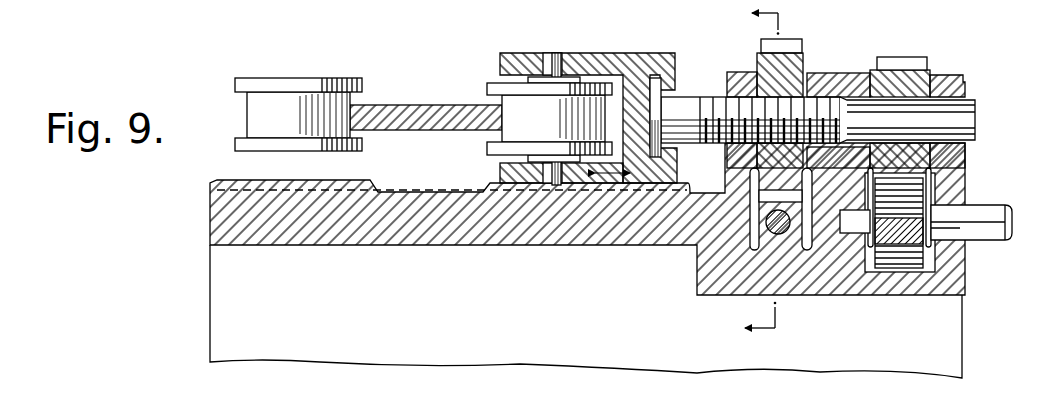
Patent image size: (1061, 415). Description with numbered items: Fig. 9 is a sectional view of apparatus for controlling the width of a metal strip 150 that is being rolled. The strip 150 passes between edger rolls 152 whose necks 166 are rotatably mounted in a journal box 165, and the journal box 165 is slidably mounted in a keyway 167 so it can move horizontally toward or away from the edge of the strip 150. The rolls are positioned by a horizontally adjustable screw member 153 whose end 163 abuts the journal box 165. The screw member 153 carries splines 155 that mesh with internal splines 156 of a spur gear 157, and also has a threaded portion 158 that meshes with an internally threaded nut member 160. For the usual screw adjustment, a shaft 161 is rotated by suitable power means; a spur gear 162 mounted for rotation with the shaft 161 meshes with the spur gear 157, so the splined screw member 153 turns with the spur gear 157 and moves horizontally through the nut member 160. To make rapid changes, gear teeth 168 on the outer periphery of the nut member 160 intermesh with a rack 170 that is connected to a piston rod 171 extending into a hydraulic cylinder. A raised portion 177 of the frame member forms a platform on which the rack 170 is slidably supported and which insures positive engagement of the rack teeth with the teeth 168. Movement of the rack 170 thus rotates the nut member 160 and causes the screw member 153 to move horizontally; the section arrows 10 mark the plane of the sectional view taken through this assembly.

The section line indicator 10 is at (750, 172).
The strip 150 is at (422, 105).
The edger rolls 152 is at (309, 78).
The screw member 153 is at (978, 111).
The splines 155 is at (963, 103).
The internal splines 156 is at (913, 97).
The spur gear 157 is at (902, 60).
The threaded portion 158 is at (831, 74).
The nut member 160 is at (805, 70).
The shaft 161 is at (962, 213).
The spur gear 162 is at (920, 263).
The end of screw member 163 is at (670, 98).
The journal box 165 is at (621, 53).
The necks 166 is at (556, 53).
The keyway 167 is at (495, 182).
The gear teeth 168 is at (790, 40).
The rack 170 is at (788, 234).
The piston rod 171 is at (784, 245).
The raised portion of frame member 177 is at (770, 262).